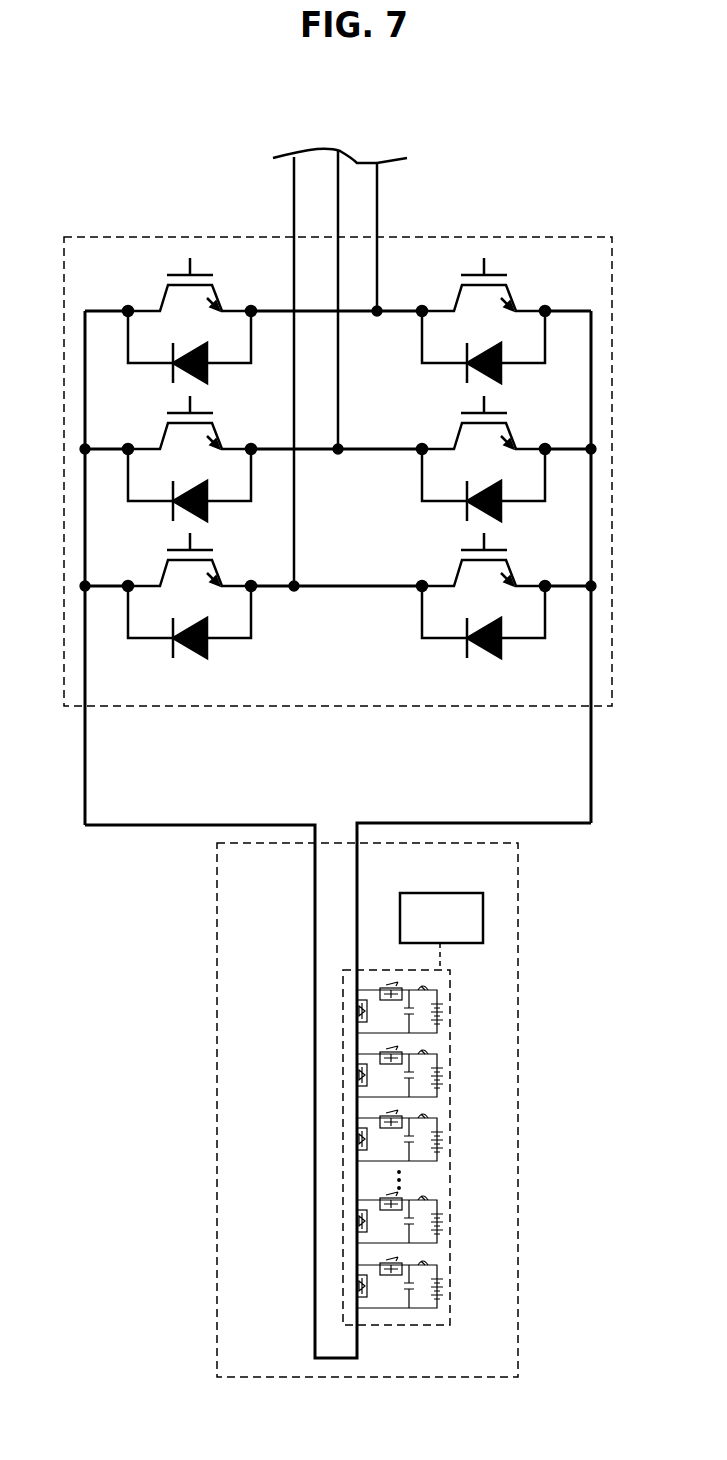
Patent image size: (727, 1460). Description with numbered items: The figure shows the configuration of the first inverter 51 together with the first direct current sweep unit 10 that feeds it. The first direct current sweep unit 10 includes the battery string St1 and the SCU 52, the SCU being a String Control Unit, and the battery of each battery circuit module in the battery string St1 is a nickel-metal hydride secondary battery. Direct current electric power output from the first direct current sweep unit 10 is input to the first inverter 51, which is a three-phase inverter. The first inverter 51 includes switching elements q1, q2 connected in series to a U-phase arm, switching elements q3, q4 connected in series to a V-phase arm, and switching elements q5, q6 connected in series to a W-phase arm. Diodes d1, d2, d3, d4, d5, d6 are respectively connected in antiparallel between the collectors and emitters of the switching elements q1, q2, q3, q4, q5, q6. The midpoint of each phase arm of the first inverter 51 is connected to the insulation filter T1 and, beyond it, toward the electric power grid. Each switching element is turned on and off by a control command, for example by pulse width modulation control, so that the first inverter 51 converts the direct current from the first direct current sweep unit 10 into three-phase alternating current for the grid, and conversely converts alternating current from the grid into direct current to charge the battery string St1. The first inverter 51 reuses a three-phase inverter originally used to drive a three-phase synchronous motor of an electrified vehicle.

The insulation filter T1 is at (347, 351).
The first inverter 51 is at (553, 237).
The switching element q1 is at (186, 562).
The switching element q2 is at (480, 562).
The switching element q3 is at (186, 425).
The switching element q4 is at (480, 425).
The switching element q5 is at (186, 287).
The switching element q6 is at (480, 287).
The diode d1 is at (194, 622).
The diode d2 is at (488, 622).
The diode d3 is at (195, 485).
The diode d4 is at (489, 485).
The diode d5 is at (195, 347).
The diode d6 is at (489, 347).
The first direct current sweep unit 10 is at (518, 1023).
The SCU 52 is at (463, 893).
The battery string St1 is at (385, 1325).